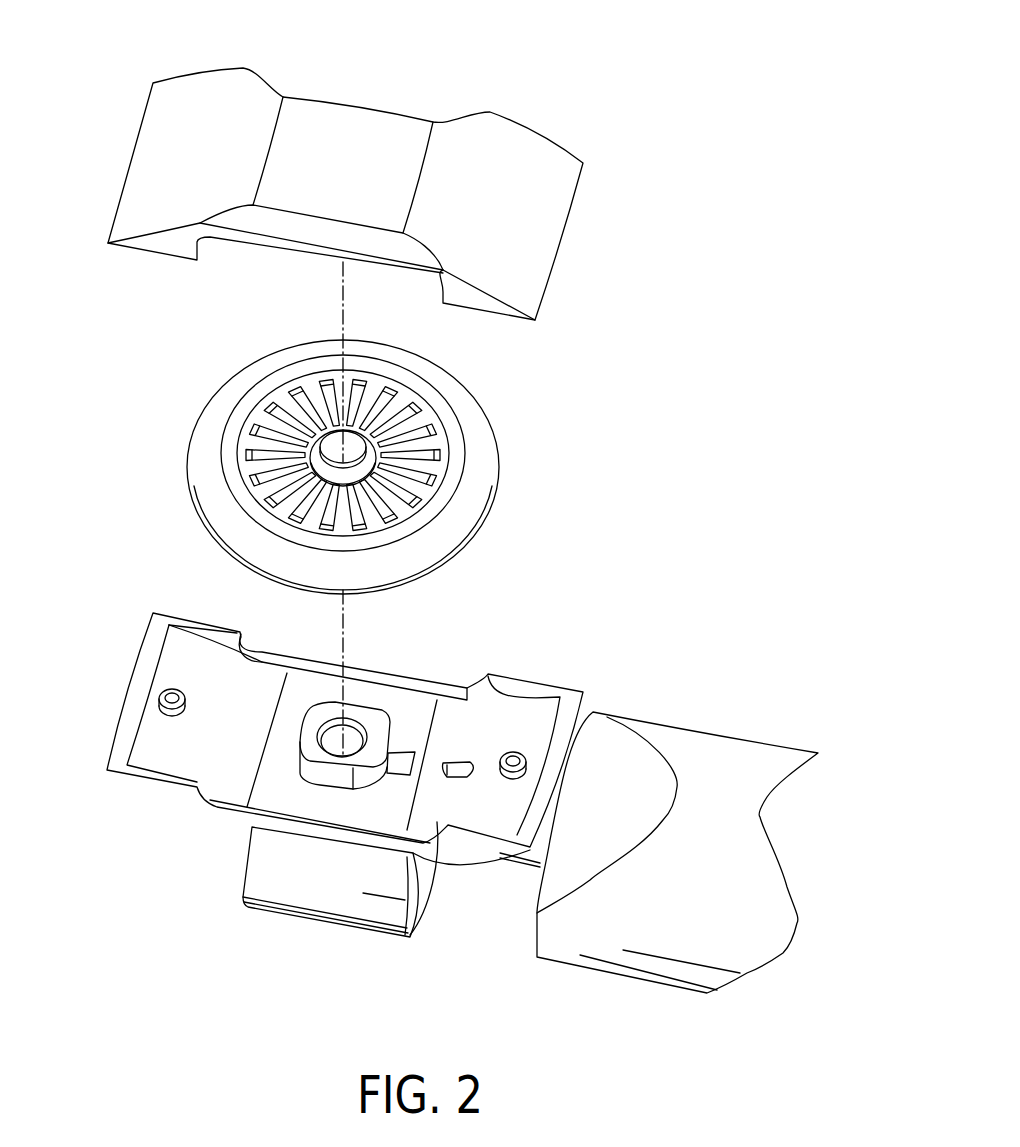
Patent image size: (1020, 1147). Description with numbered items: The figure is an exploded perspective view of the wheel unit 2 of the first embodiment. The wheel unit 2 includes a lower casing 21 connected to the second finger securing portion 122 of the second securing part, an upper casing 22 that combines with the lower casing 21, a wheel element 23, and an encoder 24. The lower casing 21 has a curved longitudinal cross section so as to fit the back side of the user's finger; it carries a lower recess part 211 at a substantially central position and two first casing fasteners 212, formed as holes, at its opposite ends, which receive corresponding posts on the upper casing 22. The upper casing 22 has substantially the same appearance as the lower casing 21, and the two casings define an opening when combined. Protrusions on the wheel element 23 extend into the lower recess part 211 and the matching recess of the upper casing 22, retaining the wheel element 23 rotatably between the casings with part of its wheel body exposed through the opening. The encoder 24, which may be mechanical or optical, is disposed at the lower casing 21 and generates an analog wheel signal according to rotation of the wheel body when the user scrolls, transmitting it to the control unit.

The wheel unit 2 is at (606, 101).
The lower casing 21 is at (522, 685).
The lower recess part 211 is at (357, 723).
The first casing fasteners 212 is at (167, 690).
The upper casing 22 is at (352, 140).
The wheel element 23 is at (203, 443).
The encoder 24 is at (392, 775).
The second finger securing portion 122 is at (330, 887).